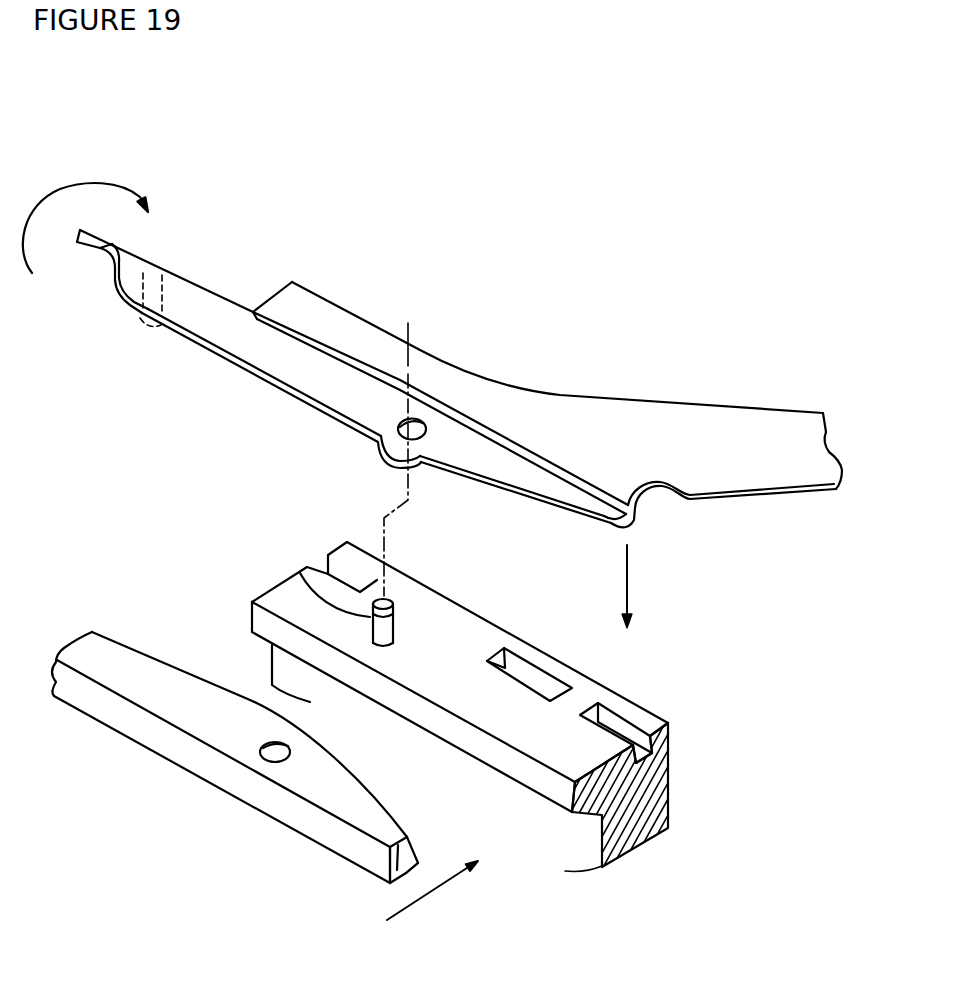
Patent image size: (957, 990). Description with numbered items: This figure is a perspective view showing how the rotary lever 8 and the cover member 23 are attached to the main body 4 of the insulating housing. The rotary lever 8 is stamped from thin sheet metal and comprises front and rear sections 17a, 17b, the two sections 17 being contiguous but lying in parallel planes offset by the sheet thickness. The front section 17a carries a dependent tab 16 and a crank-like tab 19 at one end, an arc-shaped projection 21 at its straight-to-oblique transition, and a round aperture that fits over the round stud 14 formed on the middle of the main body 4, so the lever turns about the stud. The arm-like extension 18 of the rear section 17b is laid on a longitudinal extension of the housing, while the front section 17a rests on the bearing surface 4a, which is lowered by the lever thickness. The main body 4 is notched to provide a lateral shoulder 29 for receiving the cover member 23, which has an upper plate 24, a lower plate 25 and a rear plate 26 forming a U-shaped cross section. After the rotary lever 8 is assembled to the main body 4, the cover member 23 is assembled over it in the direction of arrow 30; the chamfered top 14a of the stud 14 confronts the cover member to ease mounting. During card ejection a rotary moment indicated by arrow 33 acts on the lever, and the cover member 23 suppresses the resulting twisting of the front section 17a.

The main body 4 is at (670, 793).
The bearing surface 4a is at (587, 743).
The rotary lever 8 is at (570, 395).
The round stud 14 is at (396, 622).
The chamfered top 14a is at (300, 573).
The dependent tab 16 is at (160, 276).
The front and rear sections 17 is at (344, 305).
The front section 17a is at (247, 348).
The rear section 17b is at (368, 340).
The arm-like extension 18 is at (770, 430).
The crank-like tab 19 is at (83, 253).
The arc-shaped projection 21 is at (386, 456).
The cover member 23 is at (118, 750).
The upper plate 24 is at (136, 683).
The lower plate 25 is at (395, 880).
The rear plate 26 is at (320, 828).
The lateral shoulder 29 is at (574, 815).
The arrow 30 is at (444, 884).
The arrow 33 is at (99, 182).